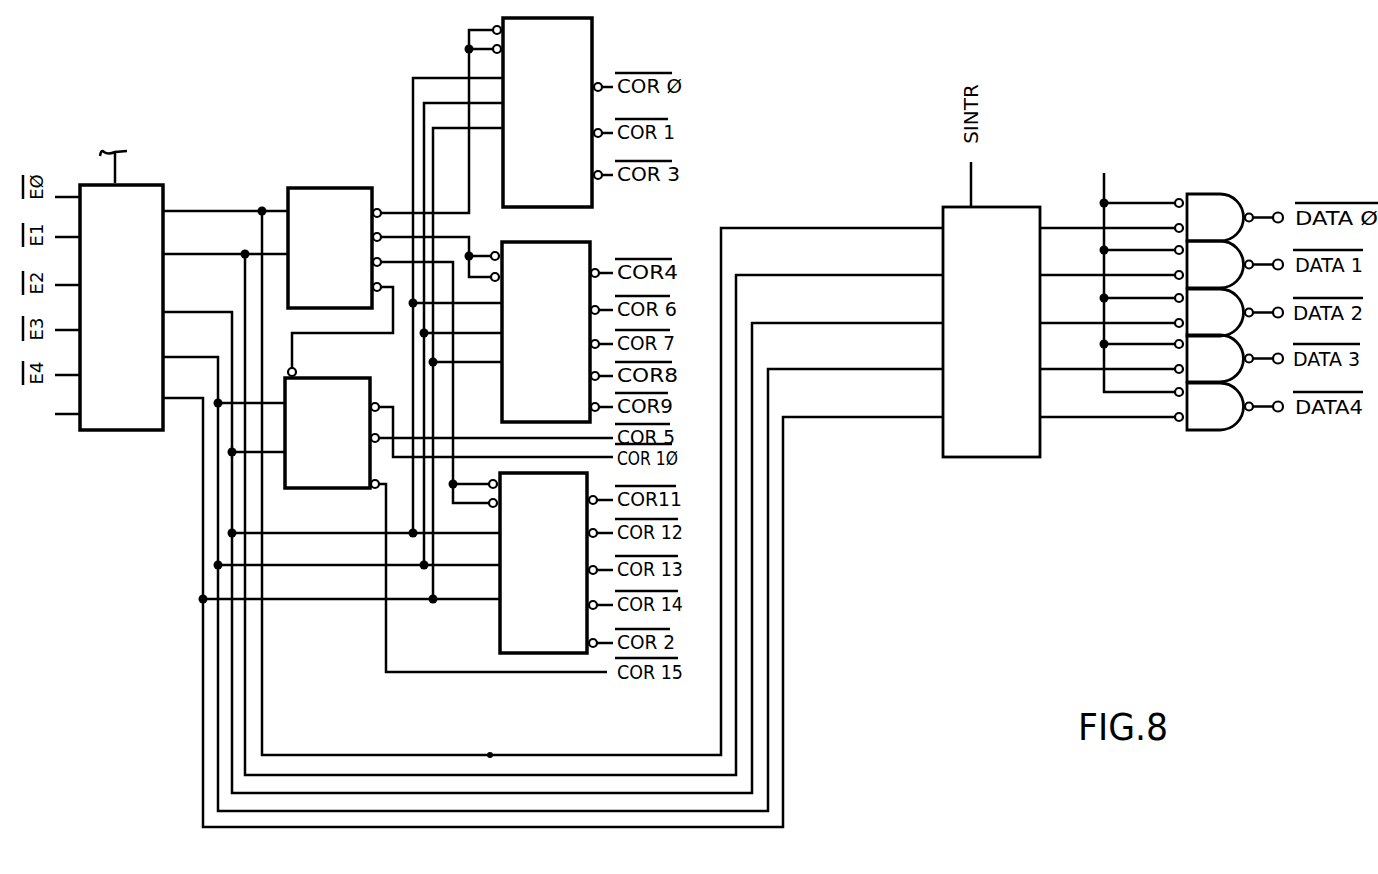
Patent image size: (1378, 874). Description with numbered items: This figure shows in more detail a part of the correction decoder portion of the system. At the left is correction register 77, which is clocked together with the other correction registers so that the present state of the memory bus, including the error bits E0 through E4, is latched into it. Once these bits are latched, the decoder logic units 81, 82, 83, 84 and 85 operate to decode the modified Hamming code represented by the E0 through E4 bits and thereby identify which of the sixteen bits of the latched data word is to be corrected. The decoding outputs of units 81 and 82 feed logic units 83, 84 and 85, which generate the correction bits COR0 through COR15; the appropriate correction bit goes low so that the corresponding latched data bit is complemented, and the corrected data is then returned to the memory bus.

The correction register 77 is at (110, 319).
The decoder logic unit 81 is at (318, 258).
The decoder logic unit 82 is at (315, 446).
The decoder logic unit 83 is at (532, 112).
The decoder logic unit 84 is at (532, 346).
The decoder logic unit 85 is at (555, 572).